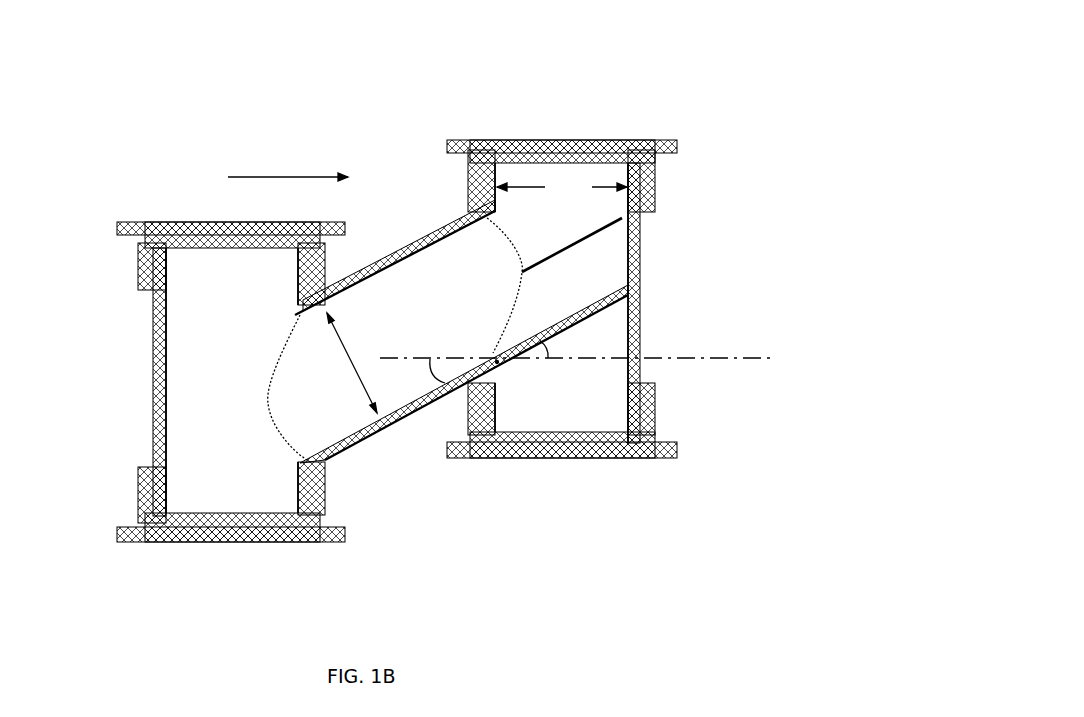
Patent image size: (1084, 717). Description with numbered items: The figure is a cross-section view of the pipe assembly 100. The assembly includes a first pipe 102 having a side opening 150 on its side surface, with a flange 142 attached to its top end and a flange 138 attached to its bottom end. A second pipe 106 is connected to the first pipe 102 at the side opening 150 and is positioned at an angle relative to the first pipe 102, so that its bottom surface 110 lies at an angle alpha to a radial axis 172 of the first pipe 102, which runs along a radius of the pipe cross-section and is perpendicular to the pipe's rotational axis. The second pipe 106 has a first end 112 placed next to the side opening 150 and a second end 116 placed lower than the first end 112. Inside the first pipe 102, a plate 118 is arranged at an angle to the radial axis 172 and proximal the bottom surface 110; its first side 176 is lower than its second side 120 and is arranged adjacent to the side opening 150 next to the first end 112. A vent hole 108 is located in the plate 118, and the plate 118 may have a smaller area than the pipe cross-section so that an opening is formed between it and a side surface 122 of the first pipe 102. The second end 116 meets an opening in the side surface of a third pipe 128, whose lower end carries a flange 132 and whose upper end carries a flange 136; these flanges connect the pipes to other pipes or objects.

The pipe assembly 100 is at (692, 88).
The first pipe 102 is at (581, 317).
The second pipe 106 is at (422, 404).
The vent hole 108 is at (565, 318).
The bottom surface 110 is at (333, 443).
The first end 112 is at (472, 216).
The second end 116 is at (300, 318).
The plate 118 is at (606, 293).
The second side 120 is at (640, 298).
The side surface 122 is at (497, 415).
The third pipe 128 is at (160, 398).
The flange 132 is at (150, 498).
The flange 136 is at (148, 262).
The flange 138 is at (655, 400).
The flange 142 is at (655, 184).
The side opening 150 is at (490, 228).
The radial axis 172 is at (722, 358).
The first side 176 is at (500, 368).